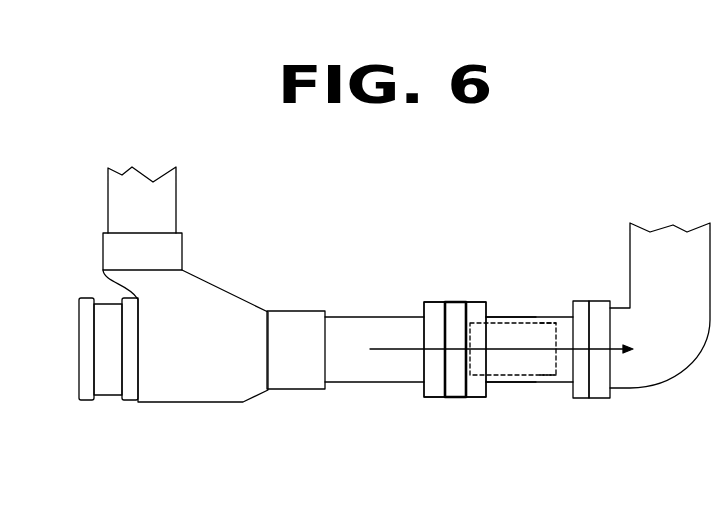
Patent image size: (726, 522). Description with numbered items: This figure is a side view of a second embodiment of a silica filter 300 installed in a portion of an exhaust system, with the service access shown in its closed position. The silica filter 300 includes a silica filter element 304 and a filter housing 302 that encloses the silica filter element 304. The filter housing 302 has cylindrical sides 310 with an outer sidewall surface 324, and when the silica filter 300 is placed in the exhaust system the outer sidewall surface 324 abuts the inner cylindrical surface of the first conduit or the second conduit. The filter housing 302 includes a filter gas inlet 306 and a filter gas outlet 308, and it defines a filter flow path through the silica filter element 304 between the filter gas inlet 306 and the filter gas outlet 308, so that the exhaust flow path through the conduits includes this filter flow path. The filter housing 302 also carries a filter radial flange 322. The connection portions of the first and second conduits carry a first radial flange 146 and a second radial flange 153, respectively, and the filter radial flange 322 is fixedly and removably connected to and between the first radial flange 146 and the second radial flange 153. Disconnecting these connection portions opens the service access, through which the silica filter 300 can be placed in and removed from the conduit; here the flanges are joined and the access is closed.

The first radial flange 146 is at (433, 302).
The second radial flange 153 is at (473, 398).
The silica filter 300 is at (536, 382).
The filter housing 302 is at (491, 382).
The silica filter element 304 is at (552, 328).
The filter gas inlet 306 is at (442, 328).
The filter gas outlet 308 is at (557, 362).
The cylindrical sides 310 is at (474, 323).
The filter radial flange 322 is at (453, 398).
The outer sidewall surface 324 is at (500, 317).